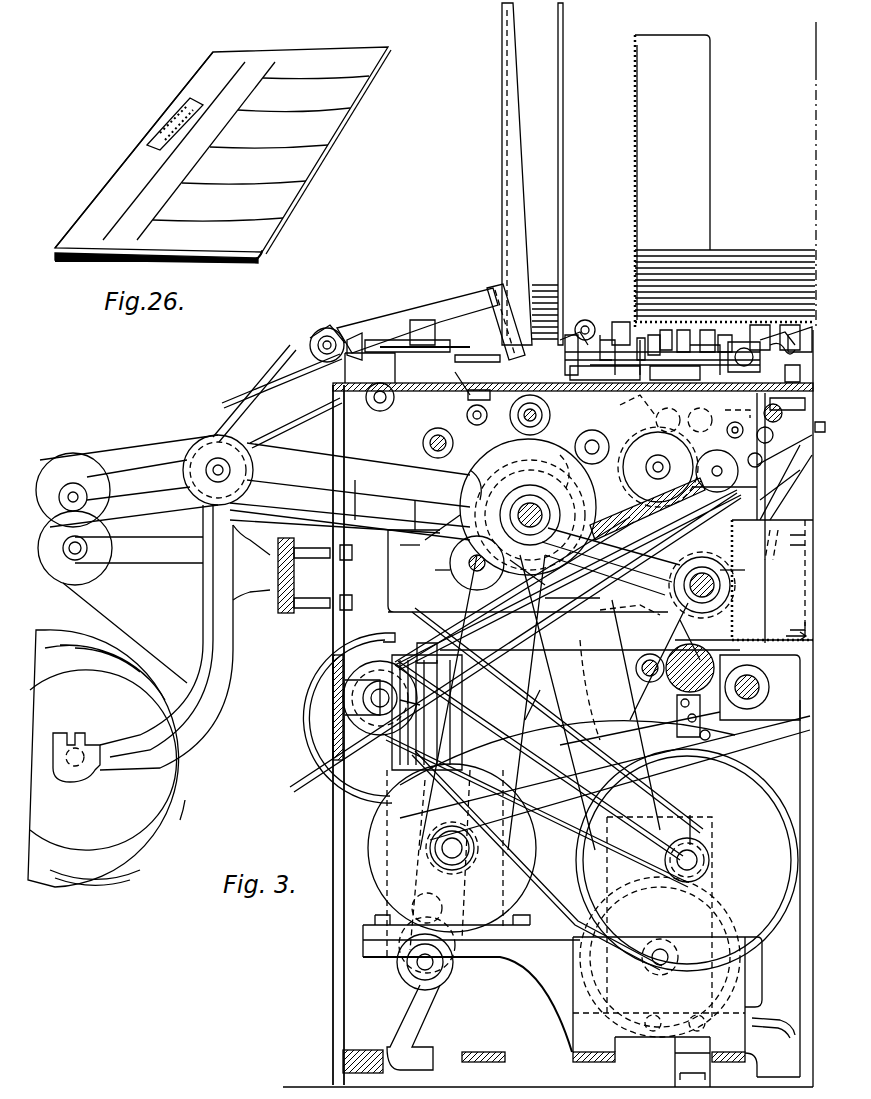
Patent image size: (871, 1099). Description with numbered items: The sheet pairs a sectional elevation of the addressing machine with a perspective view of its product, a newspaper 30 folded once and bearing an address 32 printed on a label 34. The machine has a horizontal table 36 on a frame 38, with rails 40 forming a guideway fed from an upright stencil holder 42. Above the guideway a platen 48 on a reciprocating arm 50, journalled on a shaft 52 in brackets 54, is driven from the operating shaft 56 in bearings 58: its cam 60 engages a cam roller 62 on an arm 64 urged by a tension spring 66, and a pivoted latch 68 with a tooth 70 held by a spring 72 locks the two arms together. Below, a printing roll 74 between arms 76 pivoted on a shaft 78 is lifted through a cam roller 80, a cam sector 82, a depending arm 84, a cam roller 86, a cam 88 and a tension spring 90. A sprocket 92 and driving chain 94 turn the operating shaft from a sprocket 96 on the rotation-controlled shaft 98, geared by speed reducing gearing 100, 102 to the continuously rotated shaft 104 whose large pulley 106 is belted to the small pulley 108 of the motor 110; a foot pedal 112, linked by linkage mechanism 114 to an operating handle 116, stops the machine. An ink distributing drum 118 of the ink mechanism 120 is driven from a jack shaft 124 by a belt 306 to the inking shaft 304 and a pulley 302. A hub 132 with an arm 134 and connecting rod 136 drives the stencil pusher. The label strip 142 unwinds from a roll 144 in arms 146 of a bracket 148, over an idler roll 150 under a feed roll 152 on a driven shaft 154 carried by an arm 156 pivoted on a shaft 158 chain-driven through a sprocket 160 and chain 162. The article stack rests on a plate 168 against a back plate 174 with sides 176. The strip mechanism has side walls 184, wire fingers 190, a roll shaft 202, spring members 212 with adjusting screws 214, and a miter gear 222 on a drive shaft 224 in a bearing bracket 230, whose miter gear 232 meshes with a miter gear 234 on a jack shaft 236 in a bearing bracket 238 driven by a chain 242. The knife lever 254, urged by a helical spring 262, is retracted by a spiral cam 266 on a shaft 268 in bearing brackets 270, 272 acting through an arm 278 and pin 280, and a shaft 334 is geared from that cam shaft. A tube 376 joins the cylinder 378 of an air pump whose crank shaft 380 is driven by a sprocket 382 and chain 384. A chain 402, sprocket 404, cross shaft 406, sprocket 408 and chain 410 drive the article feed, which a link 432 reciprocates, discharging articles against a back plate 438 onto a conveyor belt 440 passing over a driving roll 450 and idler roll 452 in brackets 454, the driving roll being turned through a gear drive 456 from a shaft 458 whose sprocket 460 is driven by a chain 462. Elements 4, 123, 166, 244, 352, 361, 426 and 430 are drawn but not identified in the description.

In FIG. 26, the newspaper 30 is at (205, 252).
In FIG. 3, the newspaper 30 is at (742, 262).
In FIG. 26, the address 32 is at (150, 148).
In FIG. 26, the label 34 is at (160, 118).
In FIG. 3, the frame base 4 is at (572, 601).
In FIG. 3, the table 36 is at (390, 340).
In FIG. 3, the frame 38 is at (333, 636).
In FIG. 3, the rails 40 is at (495, 380).
In FIG. 3, the stencil holder 42 is at (505, 203).
In FIG. 3, the platen 48 is at (586, 320).
In FIG. 3, the reciprocating arm 50 is at (446, 302).
In FIG. 3, the shaft 52 is at (484, 482).
In FIG. 3, the brackets 54 is at (412, 345).
In FIG. 3, the operating shaft 56 is at (527, 576).
In FIG. 3, the bearings 58 is at (591, 441).
In FIG. 3, the cam 60 is at (528, 507).
In FIG. 3, the cam roller 62 is at (462, 580).
In FIG. 3, the arm 64 is at (440, 545).
In FIG. 3, the tension spring 66 is at (625, 530).
In FIG. 3, the pivoted latch 68 is at (430, 520).
In FIG. 3, the tooth 70 is at (375, 470).
In FIG. 3, the spring 72 is at (380, 452).
In FIG. 3, the printing roll 74 is at (548, 410).
In FIG. 3, the arms 76 is at (395, 404).
In FIG. 3, the shaft 78 is at (375, 383).
In FIG. 3, the cam roller 80 is at (480, 390).
In FIG. 3, the cam sector 82 is at (455, 448).
In FIG. 3, the depending arm 84 is at (403, 557).
In FIG. 3, the cam roller 86 is at (430, 576).
In FIG. 3, the cam 88 is at (605, 575).
In FIG. 3, the tension spring 90 is at (614, 546).
In FIG. 3, the sprocket 92 is at (568, 472).
In FIG. 3, the driving chain 94 is at (548, 700).
In FIG. 3, the sprocket 96 is at (660, 957).
In FIG. 3, the rotation-controlled shaft 98 is at (648, 970).
In FIG. 3, the speed reducing gearing 100 is at (720, 875).
In FIG. 3, the speed reducing gearing 102 is at (710, 858).
In FIG. 3, the continuously-rotated shaft 104 is at (688, 830).
In FIG. 3, the large pulley 106 is at (580, 870).
In FIG. 3, the small pulley 108 is at (475, 855).
In FIG. 3, the driving motor 110 is at (540, 850).
In FIG. 3, the foot pedal 112 is at (770, 1020).
In FIG. 3, the linkage mechanism 114 is at (680, 633).
In FIG. 3, the operating handle 116 is at (784, 413).
In FIG. 3, the ink distributing roll 118 is at (637, 404).
In FIG. 3, the ink mechanism 120 is at (695, 413).
In FIG. 3, the belt 123 is at (647, 509).
In FIG. 3, the jack shaft 124 is at (355, 700).
In FIG. 3, the hub 132 is at (360, 505).
In FIG. 3, the arm 134 is at (335, 522).
In FIG. 3, the connecting rod 136 is at (388, 530).
In FIG. 3, the label strip 142 is at (112, 615).
In FIG. 3, the roll 144 is at (135, 860).
In FIG. 3, the arms 146 is at (200, 690).
In FIG. 3, the bracket 148 is at (262, 602).
In FIG. 3, the idler roll 150 is at (65, 570).
In FIG. 3, the feed roll 152 is at (63, 478).
In FIG. 3, the driven shaft 154 is at (78, 485).
In FIG. 3, the arm 156 is at (130, 475).
In FIG. 3, the shaft 158 is at (216, 462).
In FIG. 3, the sprocket 160 is at (238, 450).
In FIG. 3, the chain 162 is at (290, 518).
In FIG. 3, the lever 166 is at (575, 332).
In FIG. 3, the plate 168 is at (770, 325).
In FIG. 3, the upstanding plate 174 is at (634, 158).
In FIG. 3, the sides 176 is at (670, 45).
In FIG. 3, the side walls 184 is at (612, 308).
In FIG. 3, the wire fingers 190 is at (616, 322).
In FIG. 3, the shaft 202 is at (668, 330).
In FIG. 3, the spring members 212 is at (655, 330).
In FIG. 3, the pressure adjusting screws 214 is at (640, 330).
In FIG. 3, the miter gear 222 is at (680, 330).
In FIG. 3, the drive shaft 224 is at (500, 330).
In FIG. 3, the bearing bracket 230 is at (420, 318).
In FIG. 3, the miter gear 232 is at (352, 338).
In FIG. 3, the miter gear 234 is at (318, 332).
In FIG. 3, the jack shaft 236 is at (315, 336).
In FIG. 3, the bearing bracket 238 is at (287, 356).
In FIG. 3, the chain 242 is at (268, 378).
In FIG. 3, the arm 244 is at (210, 540).
In FIG. 3, the knife lever 254 is at (675, 374).
In FIG. 3, the helical spring 262 is at (760, 325).
In FIG. 3, the spiral cam 266 is at (728, 356).
In FIG. 3, the shaft 268 is at (666, 414).
In FIG. 3, the bearing bracket 270 is at (738, 406).
In FIG. 3, the bearing bracket 272 is at (605, 374).
In FIG. 3, the arm 278 is at (722, 335).
In FIG. 3, the pin 280 is at (706, 330).
In FIG. 3, the pulley 302 is at (740, 480).
In FIG. 3, the shaft 304 is at (645, 450).
In FIG. 3, the belt 306 is at (498, 642).
In FIG. 3, the shaft 334 is at (786, 401).
In FIG. 3, the stop 352 is at (799, 375).
In FIG. 3, the guide 361 is at (790, 330).
In FIG. 3, the tube 376 is at (300, 782).
In FIG. 3, the cylinder 378 is at (463, 676).
In FIG. 3, the crank shaft 380 is at (470, 970).
In FIG. 3, the sprocket 382 is at (430, 1020).
In FIG. 3, the chain 384 is at (535, 697).
In FIG. 3, the chain 402 is at (772, 582).
In FIG. 3, the sprocket 404 is at (768, 565).
In FIG. 3, the cross shaft 406 is at (735, 590).
In FIG. 3, the sprocket 408 is at (745, 570).
In FIG. 3, the chain 410 is at (630, 621).
In FIG. 3, the roller 426 is at (762, 458).
In FIG. 3, the roller 430 is at (749, 425).
In FIG. 3, the connecting rod 432 is at (780, 480).
In FIG. 3, the back plate 438 is at (740, 633).
In FIG. 3, the conveyor belt 440 is at (708, 668).
In FIG. 3, the driving roll 450 is at (760, 687).
In FIG. 3, the idler roll 452 is at (761, 687).
In FIG. 3, the brackets 454 is at (712, 737).
In FIG. 3, the gear drive 456 is at (645, 674).
In FIG. 3, the shaft 458 is at (609, 687).
In FIG. 3, the sprocket 460 is at (637, 860).
In FIG. 3, the chain 462 is at (640, 745).